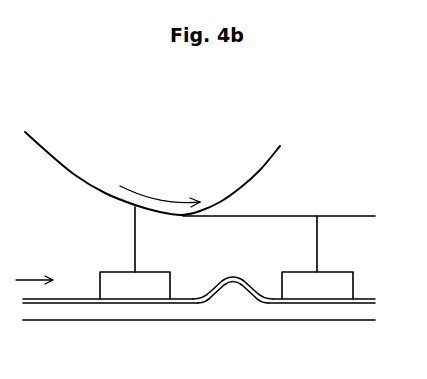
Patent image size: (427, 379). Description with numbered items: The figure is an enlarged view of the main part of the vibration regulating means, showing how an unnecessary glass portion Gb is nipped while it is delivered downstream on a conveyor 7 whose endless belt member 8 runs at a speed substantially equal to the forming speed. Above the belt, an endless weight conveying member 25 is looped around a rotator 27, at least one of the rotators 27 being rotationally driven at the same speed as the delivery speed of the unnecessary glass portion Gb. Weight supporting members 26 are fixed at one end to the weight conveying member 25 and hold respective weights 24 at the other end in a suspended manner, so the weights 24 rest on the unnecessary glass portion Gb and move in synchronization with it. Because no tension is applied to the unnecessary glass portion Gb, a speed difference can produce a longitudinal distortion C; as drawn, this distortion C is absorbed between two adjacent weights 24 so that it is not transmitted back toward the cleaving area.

The weight conveying member 25 is at (45, 150).
The rotator 27 is at (245, 186).
The weight supporting member 26 is at (135, 232).
The weight 24 is at (132, 290).
The belt member 8 is at (81, 312).
The conveyor 7 is at (217, 320).
The distortion C is at (214, 282).
The unnecessary glass portion Gb is at (74, 300).